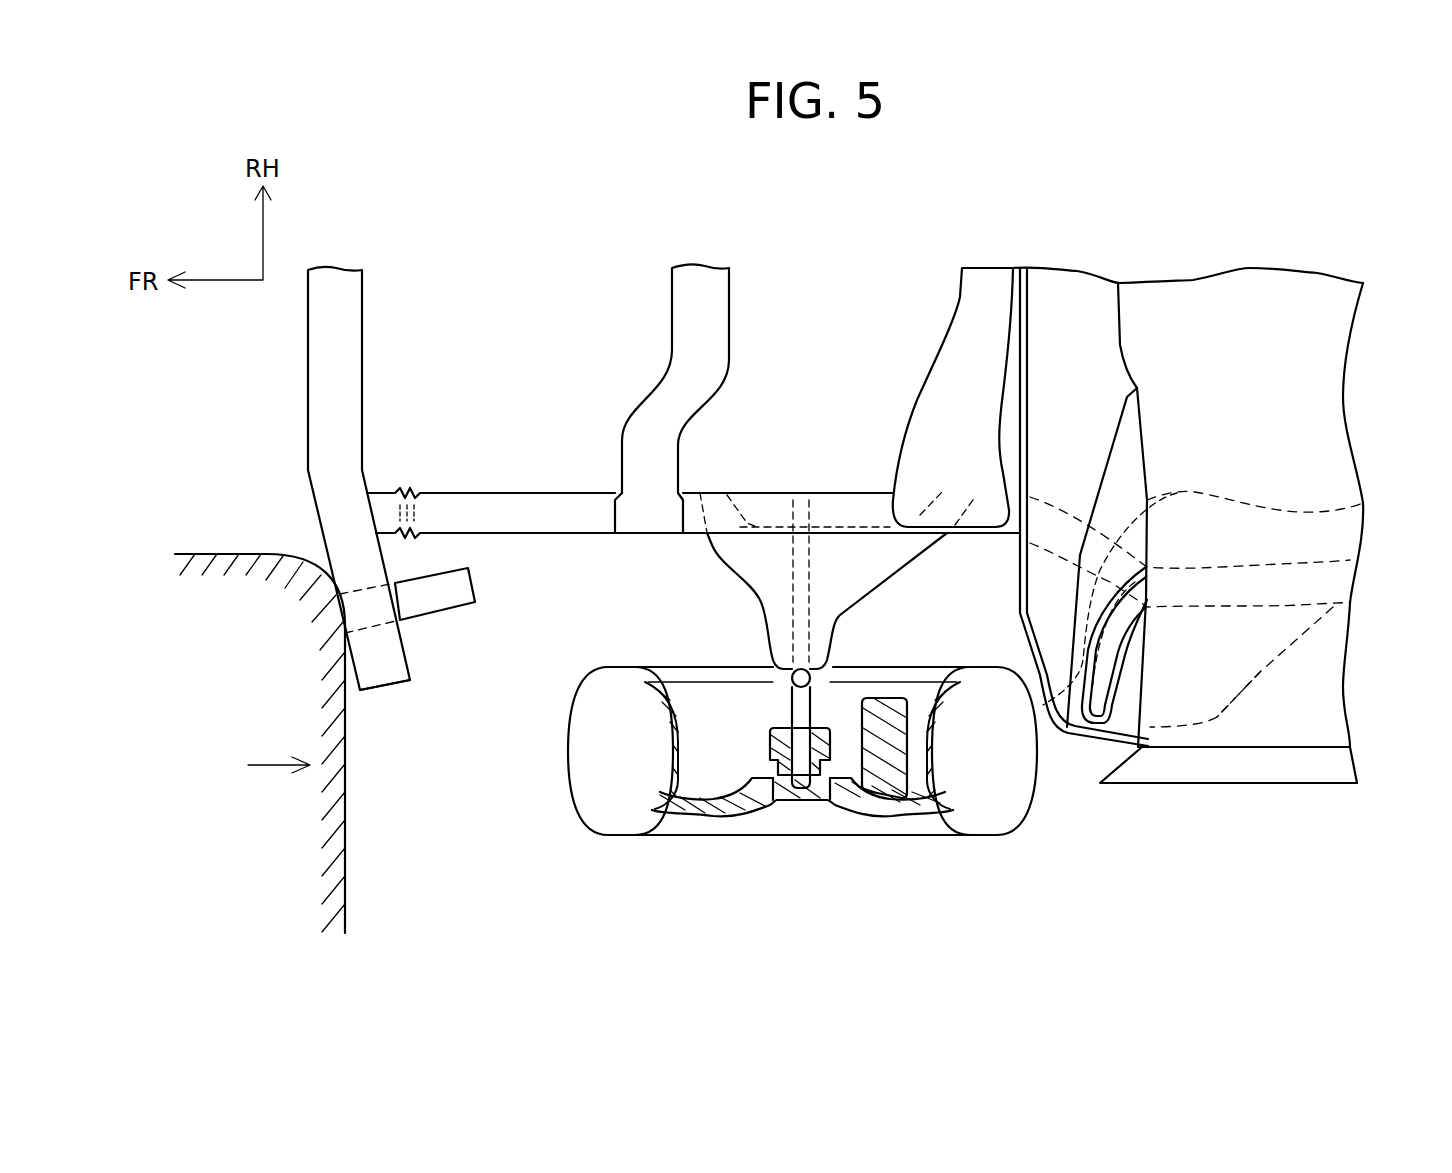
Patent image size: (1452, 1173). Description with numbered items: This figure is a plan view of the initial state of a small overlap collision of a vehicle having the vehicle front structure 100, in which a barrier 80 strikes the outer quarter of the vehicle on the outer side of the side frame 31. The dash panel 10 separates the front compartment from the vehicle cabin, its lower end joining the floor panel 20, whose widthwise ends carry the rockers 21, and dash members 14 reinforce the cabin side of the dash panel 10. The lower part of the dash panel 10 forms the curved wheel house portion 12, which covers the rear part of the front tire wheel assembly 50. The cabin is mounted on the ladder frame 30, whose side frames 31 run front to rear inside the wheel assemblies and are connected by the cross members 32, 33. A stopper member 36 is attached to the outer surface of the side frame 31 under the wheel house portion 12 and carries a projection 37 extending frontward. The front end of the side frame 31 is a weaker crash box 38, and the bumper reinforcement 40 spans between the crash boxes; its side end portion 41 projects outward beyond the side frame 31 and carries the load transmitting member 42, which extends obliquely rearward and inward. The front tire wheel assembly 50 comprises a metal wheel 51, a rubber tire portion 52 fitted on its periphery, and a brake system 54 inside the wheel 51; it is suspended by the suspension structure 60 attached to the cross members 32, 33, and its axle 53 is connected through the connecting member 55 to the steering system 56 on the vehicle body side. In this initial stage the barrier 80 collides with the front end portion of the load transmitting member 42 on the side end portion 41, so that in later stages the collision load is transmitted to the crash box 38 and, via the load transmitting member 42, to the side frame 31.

The vehicle front structure 100 is at (393, 170).
The dash panel 10 is at (1090, 257).
The wheel house portion 12 is at (1092, 733).
The dash member 14 is at (1128, 657).
The floor panel 20 is at (1310, 357).
The rocker 21 is at (1343, 763).
The ladder frame 30 is at (693, 394).
The side frame 31 is at (477, 492).
The cross member 32 is at (733, 305).
The cross member 33 is at (957, 315).
The stopper member 36 is at (1255, 677).
The projection 37 is at (1365, 500).
The crash box 38 is at (410, 491).
The bumper reinforcement 40 is at (308, 340).
The side end portion 41 is at (390, 693).
The load transmitting member 42 is at (450, 612).
The front tire wheel assembly 50 is at (771, 792).
The wheel 51 is at (740, 807).
The tire portion 52 is at (573, 813).
The axle 53 is at (813, 710).
The brake system 54 is at (903, 760).
The connecting member 55 is at (815, 677).
The steering system 56 is at (768, 530).
The suspension structure 60 is at (745, 576).
The barrier 80 is at (252, 843).